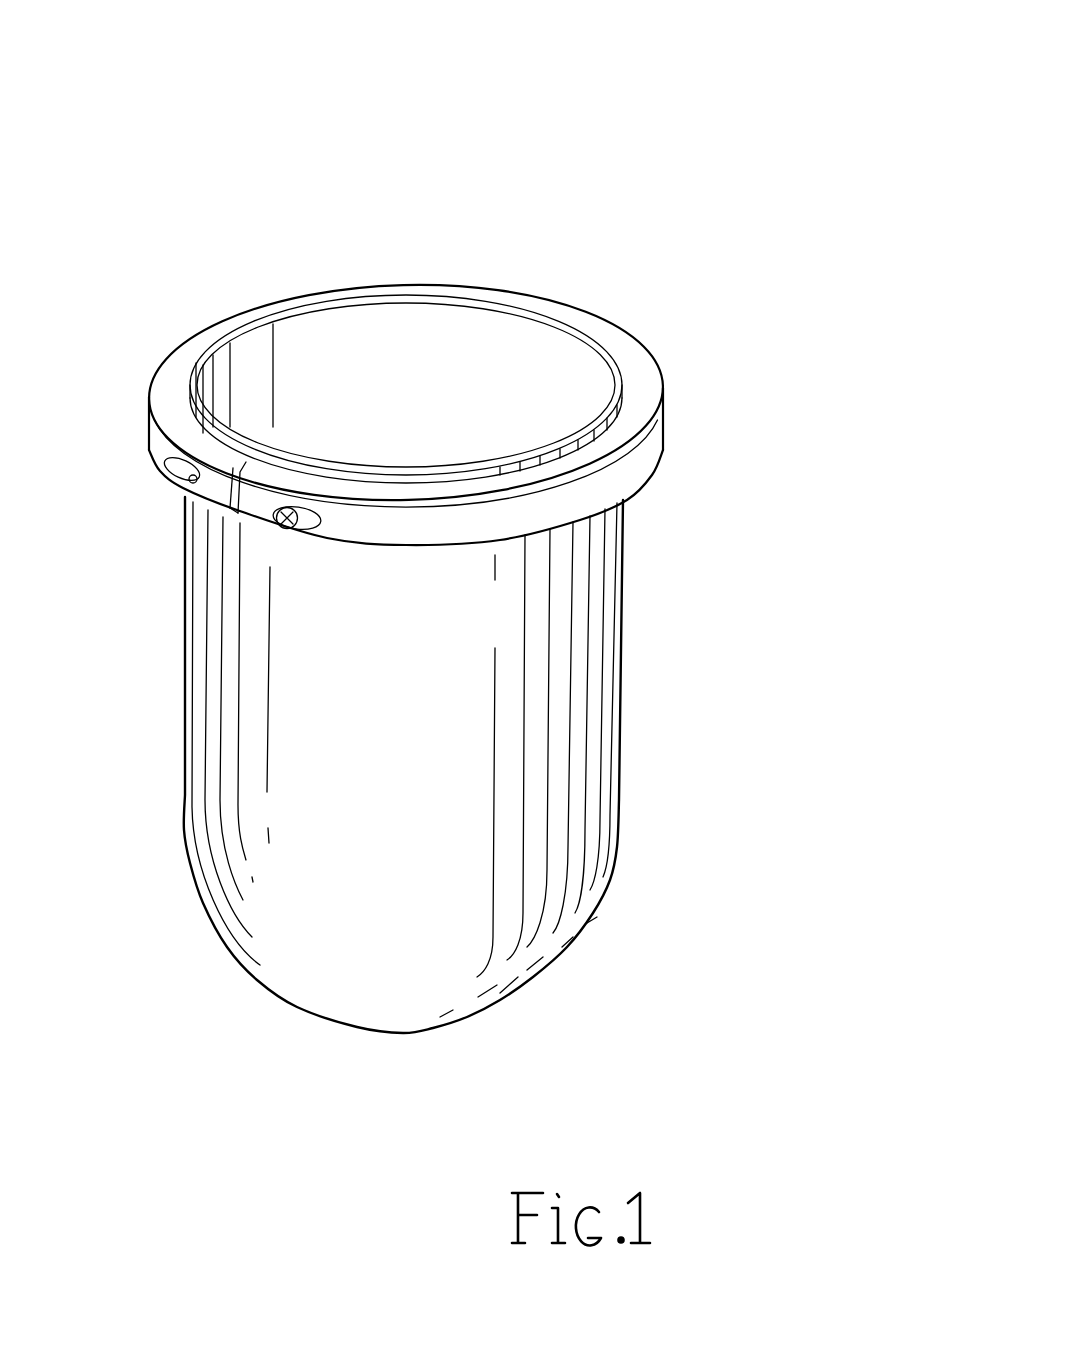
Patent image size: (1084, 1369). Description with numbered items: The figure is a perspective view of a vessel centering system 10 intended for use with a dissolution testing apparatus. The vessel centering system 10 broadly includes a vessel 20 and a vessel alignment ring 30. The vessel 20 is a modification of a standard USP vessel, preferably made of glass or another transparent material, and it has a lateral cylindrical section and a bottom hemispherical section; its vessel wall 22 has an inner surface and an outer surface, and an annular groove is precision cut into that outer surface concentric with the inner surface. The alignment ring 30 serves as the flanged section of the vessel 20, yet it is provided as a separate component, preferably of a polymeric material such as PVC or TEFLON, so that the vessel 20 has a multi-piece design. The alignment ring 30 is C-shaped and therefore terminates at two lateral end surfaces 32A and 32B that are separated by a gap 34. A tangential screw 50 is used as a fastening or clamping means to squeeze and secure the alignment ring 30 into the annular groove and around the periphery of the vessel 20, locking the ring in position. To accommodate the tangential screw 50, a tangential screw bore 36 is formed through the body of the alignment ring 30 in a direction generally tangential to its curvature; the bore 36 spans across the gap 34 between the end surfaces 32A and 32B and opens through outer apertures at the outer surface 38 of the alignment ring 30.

The vessel centering system 10 is at (635, 167).
The vessel 20 is at (708, 721).
The vessel wall 22 is at (185, 778).
The vessel alignment ring 30 is at (737, 402).
The first lateral end surface 32A is at (183, 452).
The second lateral end surface 32B is at (300, 478).
The gap 34 is at (260, 463).
The tangential screw bore 36 is at (172, 470).
The outer surface 38 is at (663, 450).
The tangential screw 50 is at (289, 523).